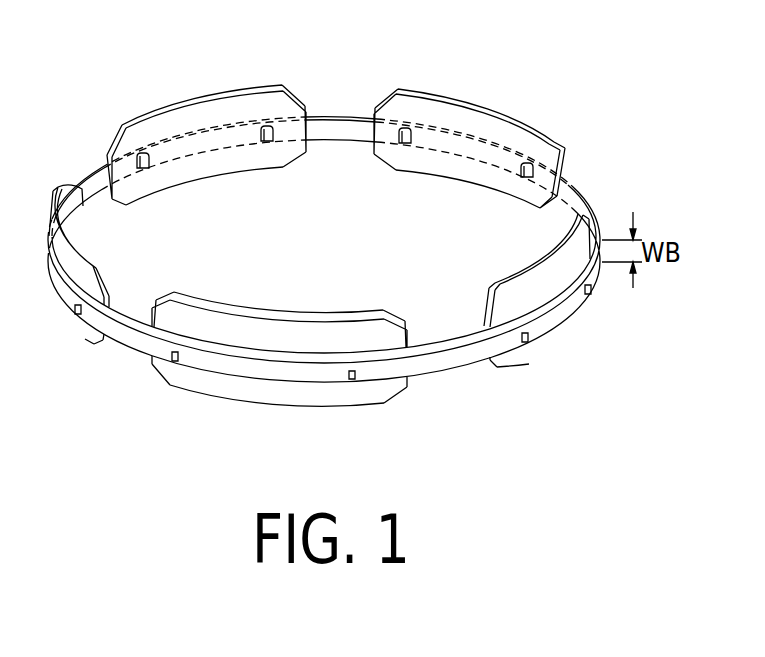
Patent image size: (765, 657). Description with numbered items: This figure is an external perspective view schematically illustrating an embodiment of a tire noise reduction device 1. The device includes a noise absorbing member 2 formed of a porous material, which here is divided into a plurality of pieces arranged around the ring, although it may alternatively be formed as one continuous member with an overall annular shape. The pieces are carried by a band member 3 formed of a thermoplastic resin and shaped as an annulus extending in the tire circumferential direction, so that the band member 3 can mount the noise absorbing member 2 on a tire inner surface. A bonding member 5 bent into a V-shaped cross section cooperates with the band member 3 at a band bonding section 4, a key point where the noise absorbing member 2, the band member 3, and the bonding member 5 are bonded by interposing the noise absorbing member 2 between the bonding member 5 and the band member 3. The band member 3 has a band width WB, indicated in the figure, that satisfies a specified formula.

The tire noise reduction device 1 is at (324, 231).
The noise absorbing member 2 is at (517, 137).
The band member 3 is at (463, 358).
The band bonding section 4 is at (175, 362).
The bonding member 5 is at (399, 136).